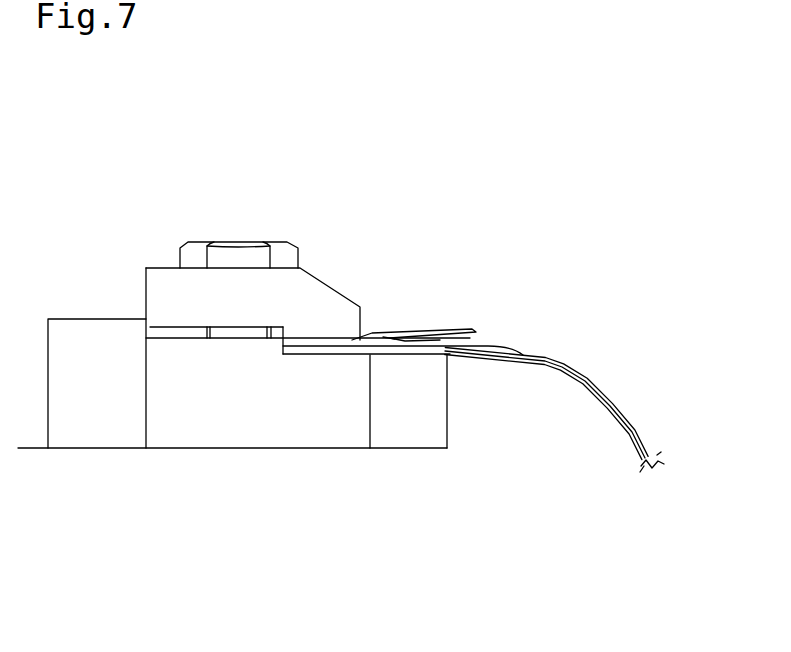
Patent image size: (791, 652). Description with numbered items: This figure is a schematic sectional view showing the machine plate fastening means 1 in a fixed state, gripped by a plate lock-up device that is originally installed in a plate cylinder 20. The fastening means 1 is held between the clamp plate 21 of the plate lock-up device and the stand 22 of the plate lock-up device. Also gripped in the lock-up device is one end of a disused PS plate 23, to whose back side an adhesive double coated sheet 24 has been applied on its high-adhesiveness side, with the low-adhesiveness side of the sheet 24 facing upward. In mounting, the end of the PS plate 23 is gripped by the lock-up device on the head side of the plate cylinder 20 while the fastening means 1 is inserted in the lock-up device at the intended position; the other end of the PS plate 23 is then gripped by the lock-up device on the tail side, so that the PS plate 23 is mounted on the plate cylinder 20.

The machine plate fastening means 1 is at (407, 320).
The plate cylinder 20 is at (545, 415).
The clamp plate of a plate lock-up device 21 is at (313, 294).
The stand of a plate lock-up device 22 is at (313, 431).
The PS plate 23 is at (538, 358).
The adhesive double coated sheet 24 is at (637, 433).